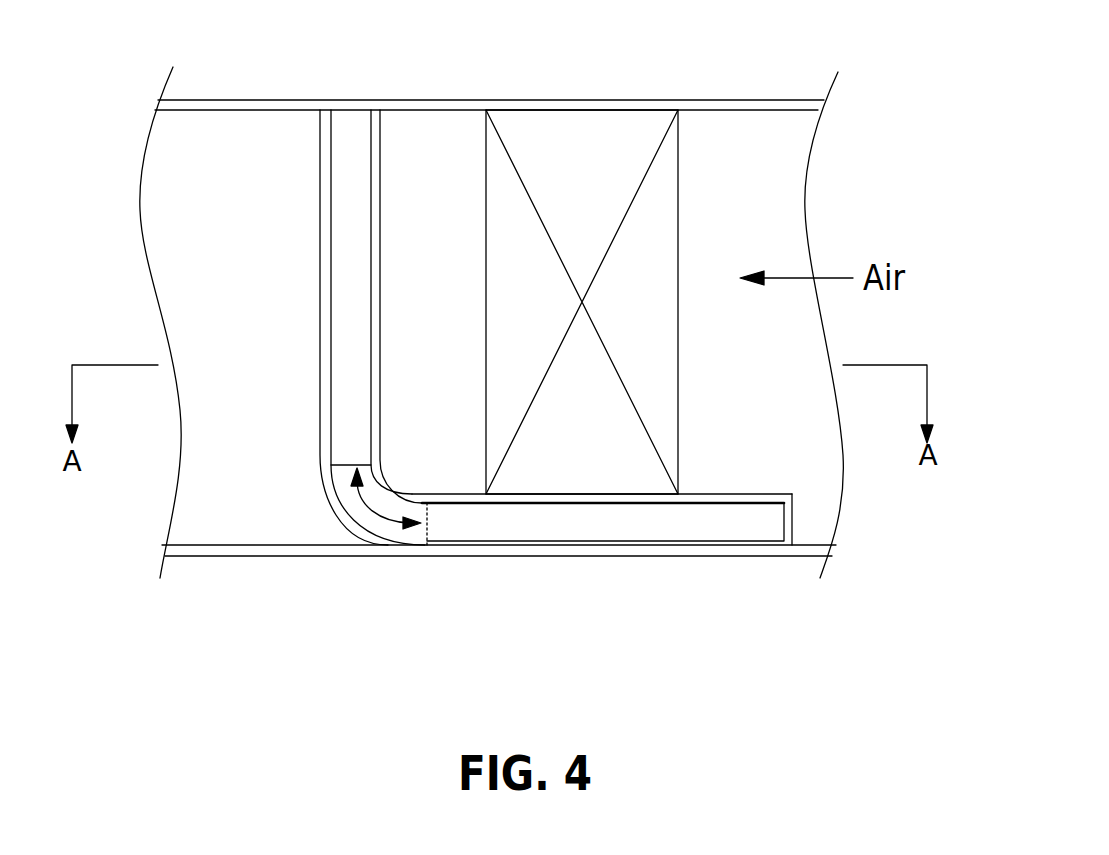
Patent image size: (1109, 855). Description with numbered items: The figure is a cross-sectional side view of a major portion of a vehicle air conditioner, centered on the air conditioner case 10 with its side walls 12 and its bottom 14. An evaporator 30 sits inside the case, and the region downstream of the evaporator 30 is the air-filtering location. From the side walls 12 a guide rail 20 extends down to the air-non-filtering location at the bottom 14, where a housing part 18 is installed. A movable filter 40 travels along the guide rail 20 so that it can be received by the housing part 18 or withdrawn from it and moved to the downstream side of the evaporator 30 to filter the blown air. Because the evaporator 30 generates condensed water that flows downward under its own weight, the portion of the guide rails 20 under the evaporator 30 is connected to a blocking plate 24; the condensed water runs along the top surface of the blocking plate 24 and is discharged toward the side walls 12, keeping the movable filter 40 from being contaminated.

The air conditioner case 10 is at (720, 93).
The side wall 12 is at (164, 258).
The bottom 14 is at (213, 108).
The housing part 18 is at (730, 536).
The guide rail 20 is at (323, 262).
The blocking plate 24 is at (472, 495).
The evaporator 30 is at (585, 123).
The movable filter 40 is at (323, 385).